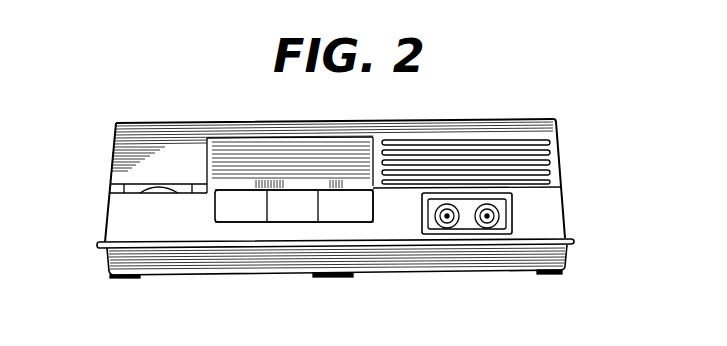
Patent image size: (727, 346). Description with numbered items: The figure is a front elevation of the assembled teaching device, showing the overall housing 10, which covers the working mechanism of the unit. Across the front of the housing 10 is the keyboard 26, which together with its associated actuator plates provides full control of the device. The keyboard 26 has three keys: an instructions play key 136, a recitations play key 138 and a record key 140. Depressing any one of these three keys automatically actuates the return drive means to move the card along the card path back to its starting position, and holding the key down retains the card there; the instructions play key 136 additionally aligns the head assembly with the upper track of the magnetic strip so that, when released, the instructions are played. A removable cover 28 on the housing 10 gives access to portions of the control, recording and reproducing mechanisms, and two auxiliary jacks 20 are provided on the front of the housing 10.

The housing 10 is at (565, 152).
The cover 28 is at (243, 150).
The keyboard 26 is at (310, 217).
The record key 140 is at (252, 218).
The recitations play key 138 is at (305, 218).
The instructions play key 136 is at (356, 218).
The auxiliary jacks 20 is at (487, 225).